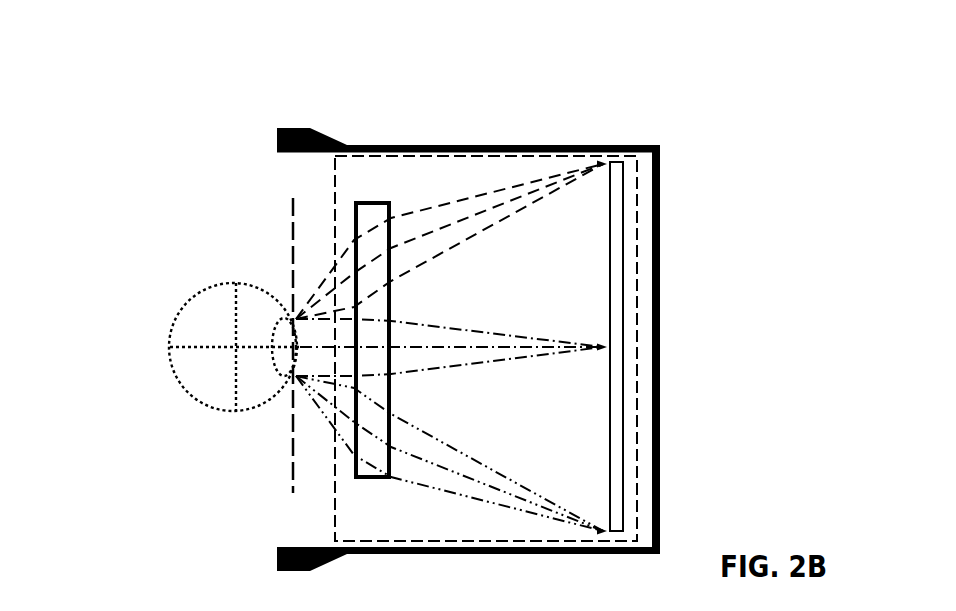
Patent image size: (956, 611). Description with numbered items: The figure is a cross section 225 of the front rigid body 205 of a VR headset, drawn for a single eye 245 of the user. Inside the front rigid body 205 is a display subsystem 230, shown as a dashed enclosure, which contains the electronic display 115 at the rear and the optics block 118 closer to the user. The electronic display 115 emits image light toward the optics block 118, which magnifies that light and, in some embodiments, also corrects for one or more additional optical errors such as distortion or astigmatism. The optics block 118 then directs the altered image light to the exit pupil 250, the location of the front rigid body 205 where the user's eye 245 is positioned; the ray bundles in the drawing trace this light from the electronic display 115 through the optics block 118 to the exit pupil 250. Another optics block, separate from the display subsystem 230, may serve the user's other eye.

The cross section 225 is at (69, 36).
The front rigid body 205 is at (631, 135).
The display subsystem 230 is at (321, 455).
The electronic display 115 is at (635, 262).
The optics block 118 is at (343, 206).
The exit pupil 250 is at (280, 482).
The eye 245 is at (188, 286).